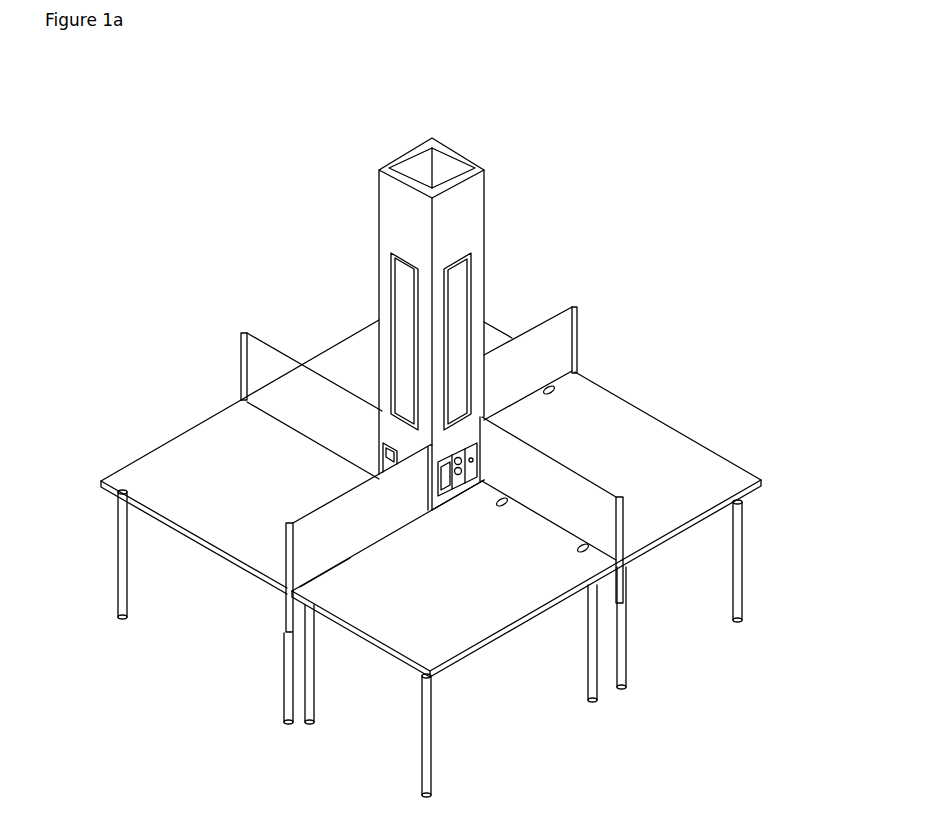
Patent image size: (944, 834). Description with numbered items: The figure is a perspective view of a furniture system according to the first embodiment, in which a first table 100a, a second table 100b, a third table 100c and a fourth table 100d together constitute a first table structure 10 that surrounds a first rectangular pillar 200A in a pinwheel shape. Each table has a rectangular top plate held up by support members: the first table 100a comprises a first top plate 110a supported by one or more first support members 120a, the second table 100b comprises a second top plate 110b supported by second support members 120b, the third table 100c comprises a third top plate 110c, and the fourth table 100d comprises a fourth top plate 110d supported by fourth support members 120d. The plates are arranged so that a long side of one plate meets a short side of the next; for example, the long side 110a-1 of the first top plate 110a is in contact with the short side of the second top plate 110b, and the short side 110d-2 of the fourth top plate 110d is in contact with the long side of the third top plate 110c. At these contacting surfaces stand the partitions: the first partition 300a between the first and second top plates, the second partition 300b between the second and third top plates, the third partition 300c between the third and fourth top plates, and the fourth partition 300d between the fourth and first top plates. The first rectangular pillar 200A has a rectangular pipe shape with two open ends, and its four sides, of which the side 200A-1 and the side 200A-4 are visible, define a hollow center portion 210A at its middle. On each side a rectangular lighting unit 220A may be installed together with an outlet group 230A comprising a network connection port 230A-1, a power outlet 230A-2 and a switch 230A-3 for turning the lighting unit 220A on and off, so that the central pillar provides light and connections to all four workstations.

The first table structure 10 is at (137, 430).
The first table 100a is at (471, 662).
The second table 100b is at (174, 541).
The third table 100c is at (358, 329).
The fourth table 100d is at (698, 427).
The first top plate 110a is at (493, 600).
The long side of first top plate 110a-1 is at (327, 573).
The second top plate 110b is at (207, 433).
The third top plate 110c is at (345, 358).
The fourth top plate 110d is at (713, 473).
The short side of fourth top plate 110d-2 is at (553, 397).
The first support member 120a is at (433, 780).
The second support member 120b is at (118, 598).
The fourth support member 120d is at (741, 602).
The first rectangular pillar 200A is at (403, 143).
The side of first rectangular pillar 200A-1 is at (388, 198).
The side of first rectangular pillar 200A-4 is at (468, 217).
The hollow center portion 210A is at (444, 163).
The rectangular lighting unit 220A is at (458, 283).
The outlet unit 230A is at (445, 526).
The network connection port 230A-1 is at (472, 480).
The power outlet 230A-2 is at (462, 478).
The switch 230A-3 is at (447, 487).
The first partition 300a is at (287, 557).
The second partition 300b is at (240, 348).
The third partition 300c is at (577, 340).
The fourth partition 300d is at (620, 520).